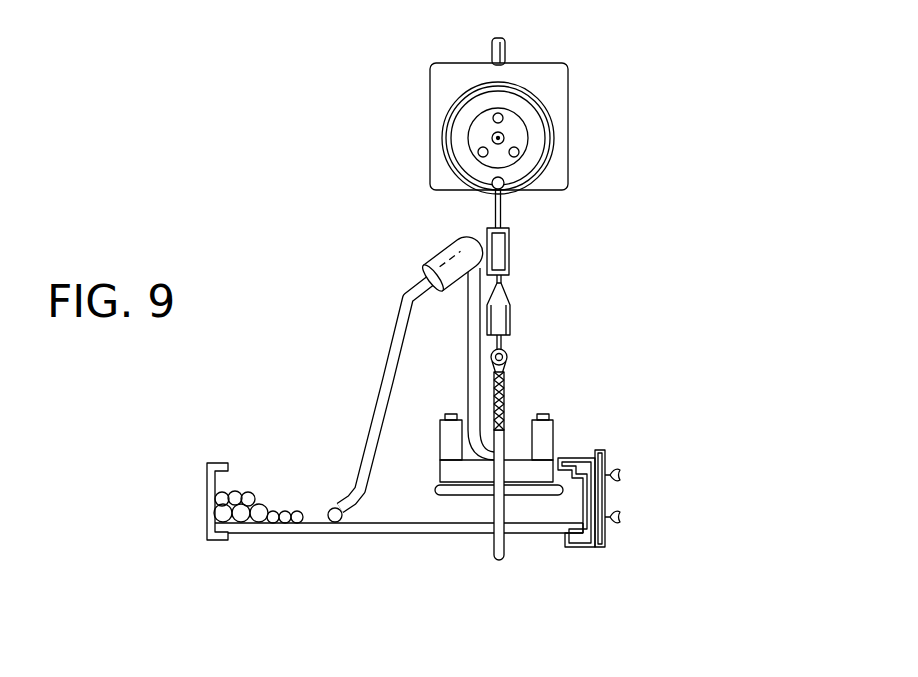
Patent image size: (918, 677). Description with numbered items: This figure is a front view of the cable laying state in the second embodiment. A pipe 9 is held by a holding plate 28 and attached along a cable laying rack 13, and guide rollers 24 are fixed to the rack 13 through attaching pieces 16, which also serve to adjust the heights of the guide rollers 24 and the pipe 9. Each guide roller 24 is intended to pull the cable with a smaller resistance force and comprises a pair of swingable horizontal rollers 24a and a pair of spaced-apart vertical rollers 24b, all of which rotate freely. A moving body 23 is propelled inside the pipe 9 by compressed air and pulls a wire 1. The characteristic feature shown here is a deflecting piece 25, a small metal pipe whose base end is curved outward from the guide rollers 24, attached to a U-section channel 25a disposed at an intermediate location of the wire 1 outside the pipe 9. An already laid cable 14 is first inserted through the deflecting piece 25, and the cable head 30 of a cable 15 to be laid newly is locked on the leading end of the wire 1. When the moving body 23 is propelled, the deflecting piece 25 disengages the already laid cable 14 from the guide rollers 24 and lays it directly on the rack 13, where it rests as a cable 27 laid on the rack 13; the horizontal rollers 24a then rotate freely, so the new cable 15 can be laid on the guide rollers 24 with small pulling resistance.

The wire 1 is at (502, 210).
The pipe 9 is at (548, 160).
The cable laying rack 13 is at (218, 462).
The already laid cable 14 is at (381, 386).
The cable to be laid newly 15 is at (507, 542).
The attaching piece 16 is at (605, 457).
The moving body 23 is at (562, 130).
The guide roller 24 is at (519, 438).
The horizontal rollers 24a is at (453, 468).
The vertical rollers 24b is at (448, 438).
The deflecting piece 25 is at (452, 252).
The channel 25a is at (512, 248).
The cable 27 is at (262, 500).
The holding plate 28 is at (538, 75).
The cable head 30 is at (505, 393).